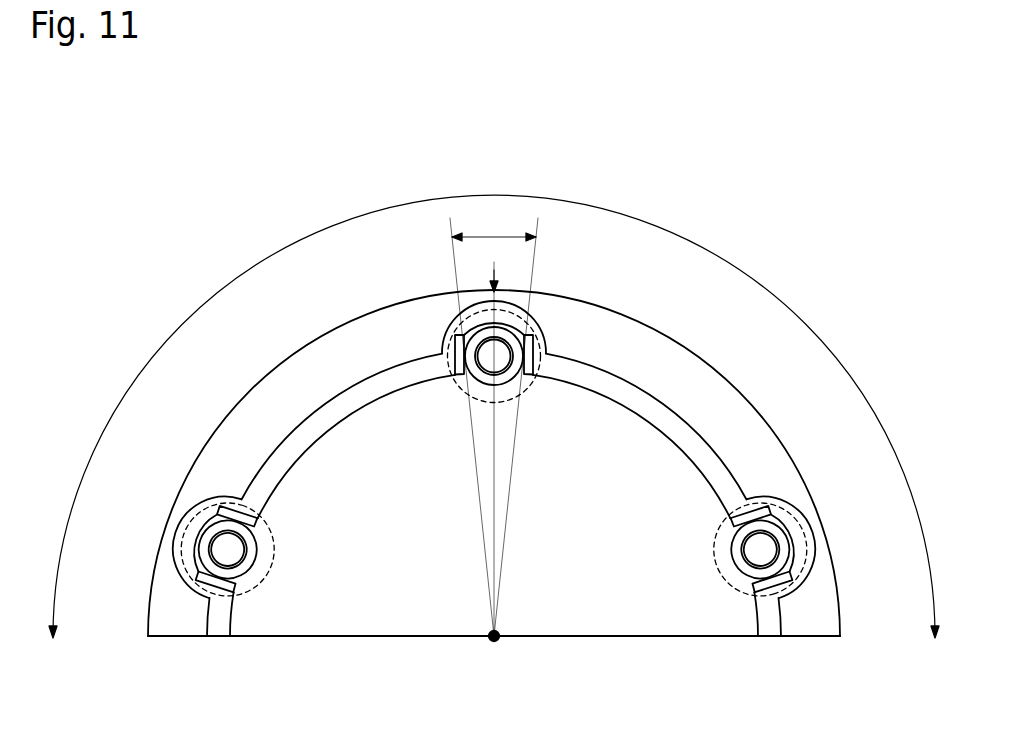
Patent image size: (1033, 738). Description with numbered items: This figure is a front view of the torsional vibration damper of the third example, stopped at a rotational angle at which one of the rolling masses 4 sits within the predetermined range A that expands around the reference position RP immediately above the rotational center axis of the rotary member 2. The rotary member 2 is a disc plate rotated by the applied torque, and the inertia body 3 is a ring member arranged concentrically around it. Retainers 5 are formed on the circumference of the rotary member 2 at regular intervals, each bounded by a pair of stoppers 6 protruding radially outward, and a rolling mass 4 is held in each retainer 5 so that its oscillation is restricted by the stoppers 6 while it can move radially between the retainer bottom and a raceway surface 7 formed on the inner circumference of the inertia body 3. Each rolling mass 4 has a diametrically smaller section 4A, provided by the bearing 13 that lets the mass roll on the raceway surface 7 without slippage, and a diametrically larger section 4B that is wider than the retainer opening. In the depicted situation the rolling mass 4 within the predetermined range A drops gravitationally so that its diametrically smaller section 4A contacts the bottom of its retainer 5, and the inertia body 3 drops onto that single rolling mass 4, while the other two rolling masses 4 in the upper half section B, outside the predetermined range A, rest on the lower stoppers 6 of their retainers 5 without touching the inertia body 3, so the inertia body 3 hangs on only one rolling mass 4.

The rotary member 2 is at (660, 443).
The inertia body 3 is at (699, 357).
The rolling mass 4 is at (500, 469).
The diametrically smaller section 4A is at (794, 556).
The diametrically larger section 4B is at (550, 337).
The retainer 5 is at (546, 364).
The stopper 6 is at (452, 338).
The raceway surface 7 is at (459, 353).
The bearing 13 is at (548, 338).
The predetermined range A is at (494, 418).
The upper half section B is at (494, 404).
The reference position RP is at (494, 441).